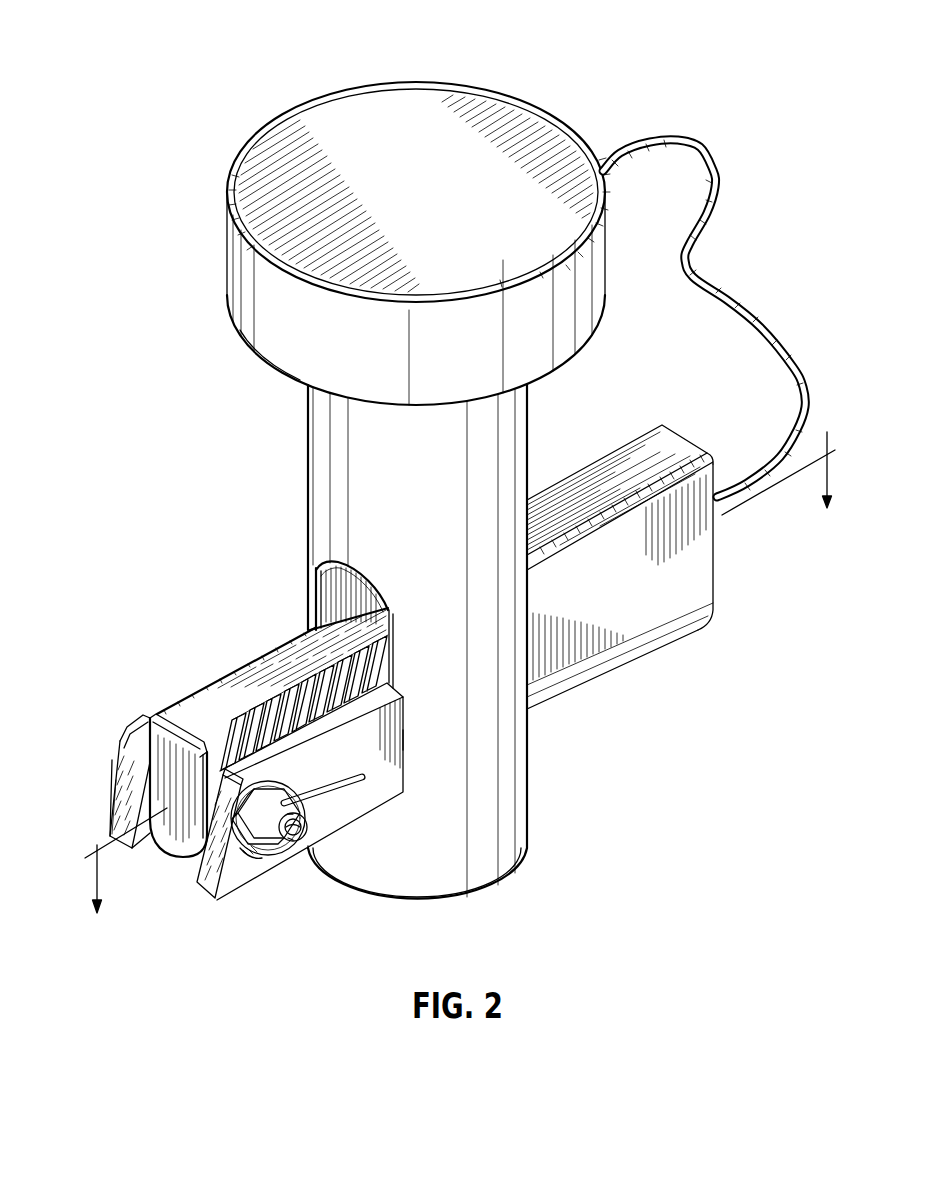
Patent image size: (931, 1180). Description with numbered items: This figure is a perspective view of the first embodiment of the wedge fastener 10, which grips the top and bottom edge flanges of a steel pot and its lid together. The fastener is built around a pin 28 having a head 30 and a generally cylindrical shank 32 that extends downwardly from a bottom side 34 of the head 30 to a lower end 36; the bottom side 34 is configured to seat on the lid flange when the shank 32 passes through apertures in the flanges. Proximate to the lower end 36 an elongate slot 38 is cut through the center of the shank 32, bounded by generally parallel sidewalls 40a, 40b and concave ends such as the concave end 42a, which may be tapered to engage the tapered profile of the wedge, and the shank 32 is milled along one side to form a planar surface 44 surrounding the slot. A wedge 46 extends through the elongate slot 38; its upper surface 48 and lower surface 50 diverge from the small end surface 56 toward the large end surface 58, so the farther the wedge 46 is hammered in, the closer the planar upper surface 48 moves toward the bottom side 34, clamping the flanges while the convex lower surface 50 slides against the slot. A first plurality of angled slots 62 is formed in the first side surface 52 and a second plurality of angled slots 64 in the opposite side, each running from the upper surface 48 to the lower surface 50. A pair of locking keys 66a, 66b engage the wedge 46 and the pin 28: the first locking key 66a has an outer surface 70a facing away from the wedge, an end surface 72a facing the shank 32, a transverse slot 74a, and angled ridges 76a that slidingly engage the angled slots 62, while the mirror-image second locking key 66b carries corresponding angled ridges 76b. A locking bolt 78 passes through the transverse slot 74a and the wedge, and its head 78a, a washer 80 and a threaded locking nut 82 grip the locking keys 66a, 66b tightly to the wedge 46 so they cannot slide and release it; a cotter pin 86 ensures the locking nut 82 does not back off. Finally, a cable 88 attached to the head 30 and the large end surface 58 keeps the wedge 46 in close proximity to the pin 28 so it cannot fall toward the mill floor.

The wedge fastener 10 is at (238, 52).
The pin 28 is at (226, 289).
The head 30 is at (374, 101).
The shank 32 is at (529, 410).
The bottom side 34 is at (259, 355).
The lower end 36 is at (458, 893).
The elongate slot 38 is at (320, 568).
The sidewall 40a is at (320, 605).
The sidewall 40b is at (380, 677).
The concave end 42a is at (360, 568).
The planar surface 44 is at (354, 866).
The wedge 46 is at (662, 652).
The upper surface 48 is at (640, 455).
The lower surface 50 is at (568, 695).
The first side surface 52 is at (640, 596).
The small end surface 56 is at (160, 782).
The large end surface 58 is at (716, 556).
The first plurality of angled slots 62 is at (258, 700).
The second plurality of angled slots 64 is at (280, 642).
The first locking key 66a is at (215, 900).
The second locking key 66b is at (114, 802).
The outer surface 70a is at (360, 768).
The end surface 72a is at (403, 738).
The transverse slot 74a is at (258, 862).
The angled ridges 76a is at (280, 745).
The angled ridges 76b is at (143, 847).
The locking bolt 78 is at (143, 715).
The head 78a is at (118, 748).
The washer 80 is at (232, 856).
The locking nut 82 is at (284, 860).
The cotter pin 86 is at (365, 778).
The cable 88 is at (718, 180).